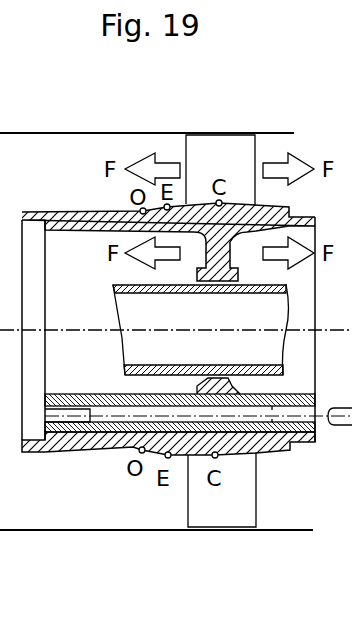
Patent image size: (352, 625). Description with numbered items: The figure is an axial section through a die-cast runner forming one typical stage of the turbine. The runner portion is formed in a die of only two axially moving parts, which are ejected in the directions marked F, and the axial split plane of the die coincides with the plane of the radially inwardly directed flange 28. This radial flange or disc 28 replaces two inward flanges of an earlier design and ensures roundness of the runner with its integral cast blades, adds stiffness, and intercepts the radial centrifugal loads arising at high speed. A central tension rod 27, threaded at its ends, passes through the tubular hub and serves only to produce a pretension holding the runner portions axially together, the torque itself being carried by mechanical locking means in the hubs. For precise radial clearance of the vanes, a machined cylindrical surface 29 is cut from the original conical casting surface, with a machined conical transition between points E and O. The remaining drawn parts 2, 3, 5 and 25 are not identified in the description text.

The connecting piece 2 is at (340, 457).
The valve housing 3 is at (88, 217).
The clamping blocks 5 is at (221, 331).
The lower housing portion 25 is at (110, 436).
The central tension rod 27 is at (271, 345).
The radially inwardly directed flange 28 is at (223, 249).
The machined cylindrical surface 29 is at (67, 452).